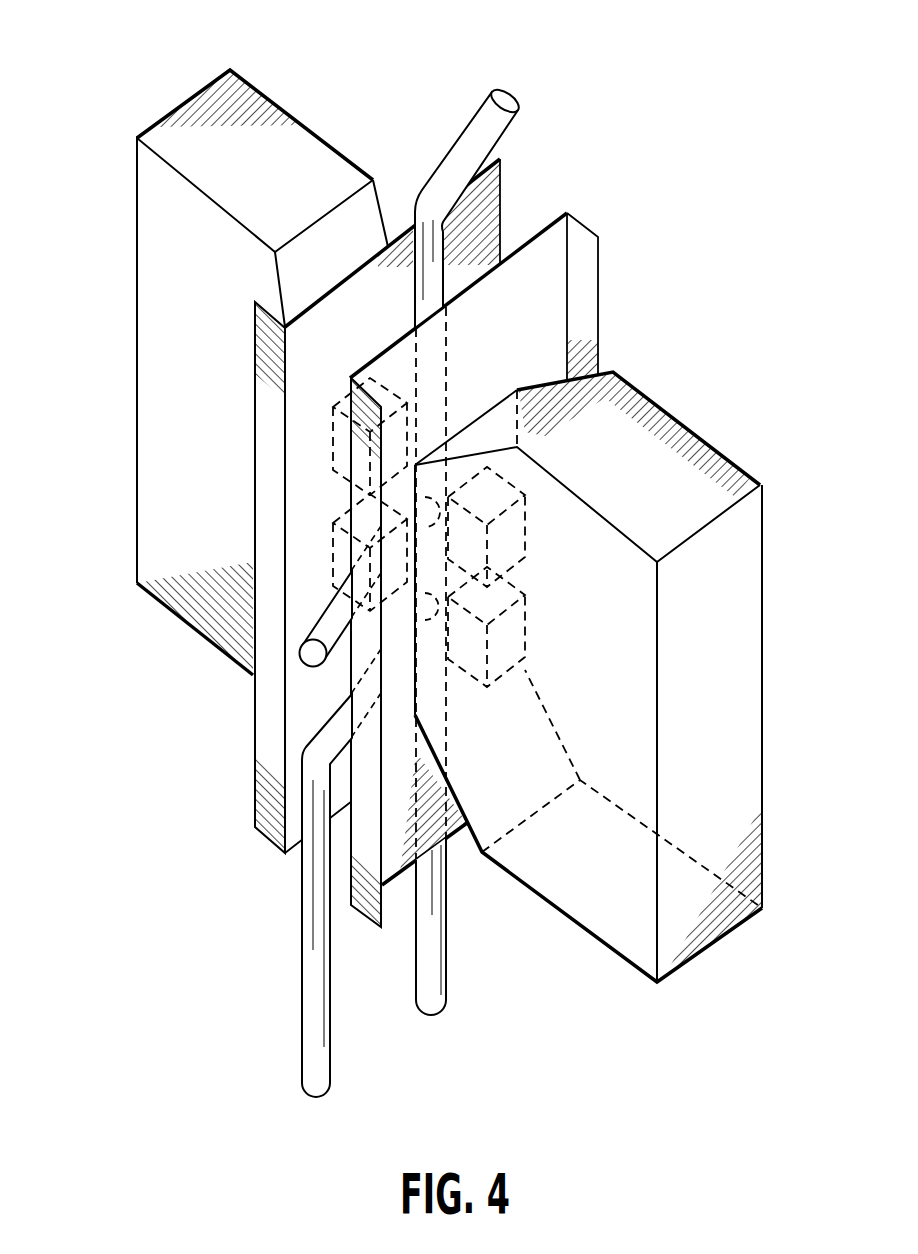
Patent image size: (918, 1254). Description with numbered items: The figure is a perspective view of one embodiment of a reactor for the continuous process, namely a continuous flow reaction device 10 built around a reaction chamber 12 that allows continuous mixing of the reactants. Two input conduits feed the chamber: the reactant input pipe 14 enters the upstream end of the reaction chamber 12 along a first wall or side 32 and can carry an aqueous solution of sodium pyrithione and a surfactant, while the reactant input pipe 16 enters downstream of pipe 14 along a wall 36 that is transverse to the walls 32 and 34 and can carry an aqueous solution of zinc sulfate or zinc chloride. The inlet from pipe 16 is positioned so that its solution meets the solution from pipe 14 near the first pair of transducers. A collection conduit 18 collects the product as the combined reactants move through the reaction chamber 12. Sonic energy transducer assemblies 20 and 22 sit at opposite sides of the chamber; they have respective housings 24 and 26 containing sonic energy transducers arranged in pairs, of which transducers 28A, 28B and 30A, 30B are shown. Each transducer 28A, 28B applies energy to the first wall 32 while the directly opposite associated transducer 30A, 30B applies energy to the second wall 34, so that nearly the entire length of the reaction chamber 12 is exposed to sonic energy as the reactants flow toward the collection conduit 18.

The continuous flow reaction device 10 is at (443, 548).
The reaction chamber 12 is at (460, 486).
The reactant input pipe 14 is at (438, 962).
The reactant input pipe 16 is at (313, 632).
The collection conduit 18 is at (505, 128).
The sonic energy transducer assembly 20 is at (272, 102).
The sonic energy transducer assembly 22 is at (631, 703).
The housing 24 is at (214, 342).
The housing 26 is at (617, 955).
The sonic energy transducer 28A is at (342, 544).
The sonic energy transducer 28B is at (340, 453).
The sonic energy transducer 30A is at (540, 650).
The sonic energy transducer 30B is at (510, 537).
The first wall 32 is at (257, 787).
The second wall 34 is at (368, 907).
The wall 36 is at (430, 397).